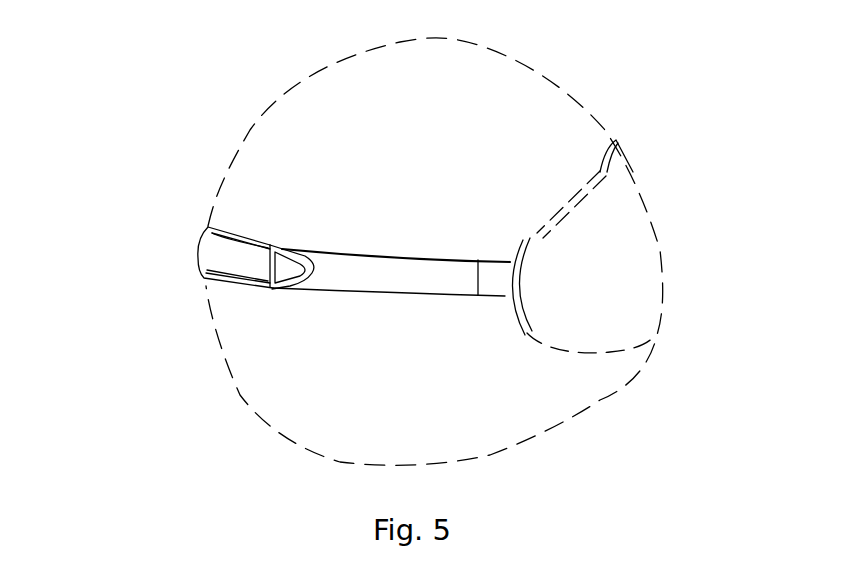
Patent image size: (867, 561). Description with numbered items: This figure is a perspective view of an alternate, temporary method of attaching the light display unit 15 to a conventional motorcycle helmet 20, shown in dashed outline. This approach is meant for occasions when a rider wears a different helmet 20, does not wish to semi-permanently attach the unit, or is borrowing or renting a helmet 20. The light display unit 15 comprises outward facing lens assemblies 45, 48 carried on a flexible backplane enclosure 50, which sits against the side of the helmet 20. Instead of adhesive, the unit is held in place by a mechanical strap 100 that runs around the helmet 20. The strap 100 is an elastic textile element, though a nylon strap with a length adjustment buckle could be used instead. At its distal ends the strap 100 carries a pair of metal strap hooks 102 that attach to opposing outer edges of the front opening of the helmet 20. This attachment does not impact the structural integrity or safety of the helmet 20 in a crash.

The light display unit 15 is at (162, 243).
The motorcycle helmet 20 is at (582, 148).
The outward facing lens assembly 45 is at (223, 263).
The outward facing lens assembly 48 is at (287, 268).
The flexible backplane enclosure 50 is at (238, 244).
The mechanical strap 100 is at (445, 272).
The metal strap hook 102 is at (500, 280).